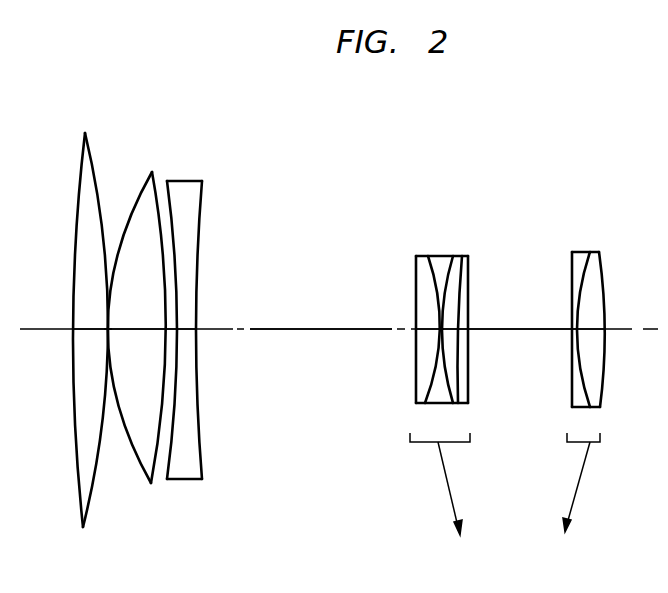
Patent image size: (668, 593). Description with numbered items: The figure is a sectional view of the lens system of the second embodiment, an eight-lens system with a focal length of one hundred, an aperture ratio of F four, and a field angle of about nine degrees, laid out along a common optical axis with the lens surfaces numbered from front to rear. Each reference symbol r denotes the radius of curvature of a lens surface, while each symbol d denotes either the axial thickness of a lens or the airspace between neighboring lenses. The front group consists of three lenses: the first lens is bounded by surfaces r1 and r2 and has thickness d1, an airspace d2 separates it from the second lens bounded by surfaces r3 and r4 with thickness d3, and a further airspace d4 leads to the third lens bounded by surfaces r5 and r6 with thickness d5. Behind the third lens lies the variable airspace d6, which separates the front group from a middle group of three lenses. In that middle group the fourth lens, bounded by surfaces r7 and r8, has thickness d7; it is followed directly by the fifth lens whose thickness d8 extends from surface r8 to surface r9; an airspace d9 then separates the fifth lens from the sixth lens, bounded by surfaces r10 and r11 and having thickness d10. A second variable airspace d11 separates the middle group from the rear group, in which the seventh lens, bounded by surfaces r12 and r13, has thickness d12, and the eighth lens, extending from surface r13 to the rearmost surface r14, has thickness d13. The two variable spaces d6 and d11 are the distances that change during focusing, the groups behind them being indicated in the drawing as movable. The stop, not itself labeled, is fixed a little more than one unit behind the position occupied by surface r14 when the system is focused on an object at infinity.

The radius of curvature of first lens surface r1 is at (79, 158).
The radius of curvature of second lens surface r2 is at (97, 152).
The radius of curvature of third lens surface r3 is at (146, 170).
The radius of curvature of fourth lens surface r4 is at (157, 173).
The radius of curvature of fifth lens surface r5 is at (172, 187).
The radius of curvature of sixth lens surface r6 is at (202, 188).
The radius of curvature of seventh lens surface r7 is at (416, 268).
The radius of curvature of eighth lens surface r8 is at (428, 262).
The radius of curvature of ninth lens surface r9 is at (445, 262).
The radius of curvature of tenth lens surface r10 is at (461, 260).
The radius of curvature of eleventh lens surface r11 is at (468, 268).
The radius of curvature of twelfth lens surface r12 is at (572, 268).
The radius of curvature of thirteenth lens surface r13 is at (590, 262).
The radius of curvature of fourteenth lens surface r14 is at (602, 268).
The thickness of first lens d1 is at (85, 333).
The airspace between first and second lenses d2 is at (107, 327).
The thickness of second lens d3 is at (137, 332).
The airspace between second and third lenses d4 is at (165, 327).
The thickness of third lens d5 is at (192, 332).
The variable airspace between third and fourth lenses d6 is at (305, 332).
The thickness of fourth lens d7 is at (421, 325).
The thickness of fifth lens d8 is at (440, 334).
The airspace between fifth and sixth lenses d9 is at (455, 325).
The thickness of sixth lens d10 is at (463, 334).
The variable airspace between sixth and seventh lenses d11 is at (526, 328).
The thickness of seventh lens d12 is at (574, 333).
The thickness of eighth lens d13 is at (594, 333).